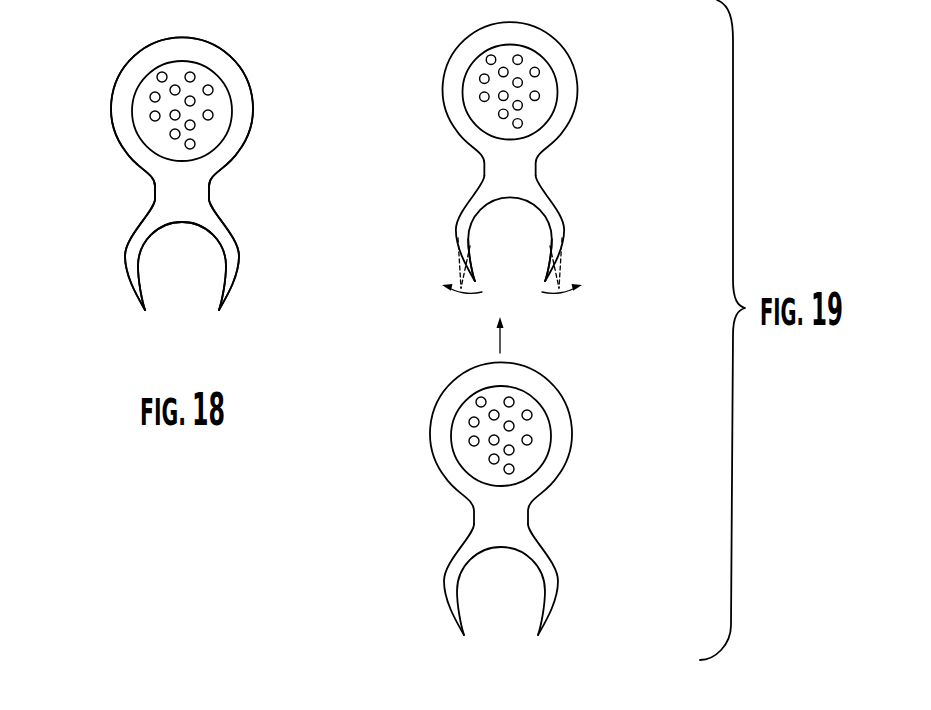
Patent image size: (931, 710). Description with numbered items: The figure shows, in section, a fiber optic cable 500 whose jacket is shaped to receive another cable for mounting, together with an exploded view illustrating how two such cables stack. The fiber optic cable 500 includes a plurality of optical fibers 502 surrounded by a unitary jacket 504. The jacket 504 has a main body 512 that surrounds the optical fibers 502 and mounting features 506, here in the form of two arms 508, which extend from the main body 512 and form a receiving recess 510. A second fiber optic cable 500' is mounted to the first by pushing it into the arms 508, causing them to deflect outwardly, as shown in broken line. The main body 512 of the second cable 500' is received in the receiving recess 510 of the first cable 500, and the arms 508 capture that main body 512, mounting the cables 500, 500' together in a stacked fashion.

In FIG. 18, the fiber optic cable 500 is at (231, 173).
In FIG. 19, the fiber optic cable 500 is at (549, 151).
In FIG. 19, the second fiber optic cable 500' is at (540, 498).
In FIG. 18, the optical fibers 502 is at (195, 73).
In FIG. 18, the unitary jacket 504 is at (127, 172).
In FIG. 18, the mounting features 506 is at (252, 270).
In FIG. 18, the arms 508 is at (130, 275).
In FIG. 19, the arms 508 is at (457, 258).
In FIG. 18, the receiving recess 510 is at (193, 292).
In FIG. 18, the main body 512 is at (120, 124).
In FIG. 19, the main body 512 is at (560, 420).